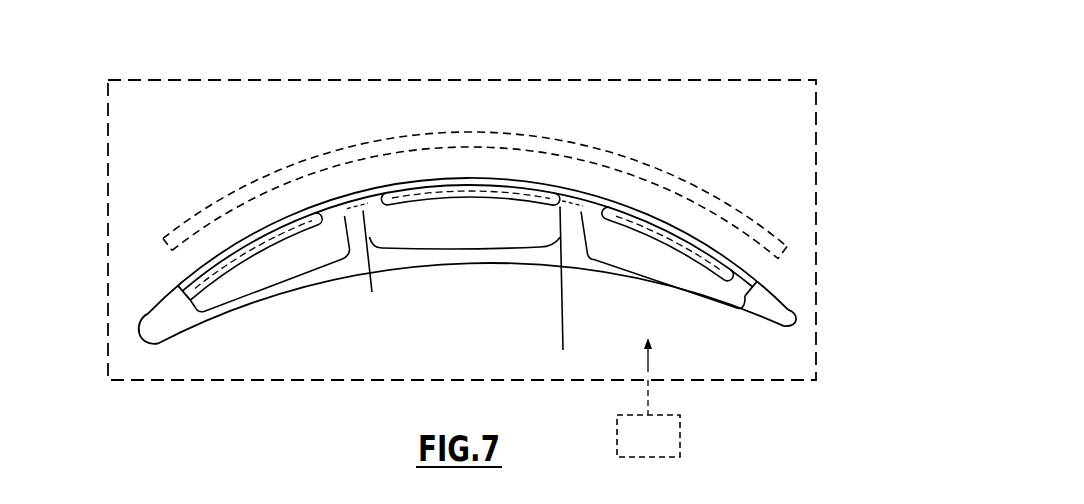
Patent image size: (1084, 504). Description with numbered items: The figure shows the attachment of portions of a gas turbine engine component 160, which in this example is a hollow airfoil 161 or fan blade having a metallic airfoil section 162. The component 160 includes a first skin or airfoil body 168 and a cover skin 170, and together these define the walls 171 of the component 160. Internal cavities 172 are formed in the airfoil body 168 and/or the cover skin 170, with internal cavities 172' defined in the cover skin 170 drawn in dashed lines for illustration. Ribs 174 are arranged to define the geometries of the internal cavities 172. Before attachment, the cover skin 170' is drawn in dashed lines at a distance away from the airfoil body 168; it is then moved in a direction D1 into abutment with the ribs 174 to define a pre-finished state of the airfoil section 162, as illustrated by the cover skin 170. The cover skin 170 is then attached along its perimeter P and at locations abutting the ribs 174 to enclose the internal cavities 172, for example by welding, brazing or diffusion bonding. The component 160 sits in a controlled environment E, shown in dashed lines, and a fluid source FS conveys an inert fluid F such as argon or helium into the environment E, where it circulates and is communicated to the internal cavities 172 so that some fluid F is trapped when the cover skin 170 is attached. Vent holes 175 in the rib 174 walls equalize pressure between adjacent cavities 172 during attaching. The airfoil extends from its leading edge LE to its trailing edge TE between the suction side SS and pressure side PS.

The component 160 is at (231, 150).
The hollow airfoil 161 is at (455, 181).
The metallic airfoil section 162 is at (134, 310).
The airfoil body 168 is at (203, 323).
The cover skin 170 is at (437, 251).
The cover skin 170' is at (456, 195).
The walls 171 is at (240, 249).
The internal cavities 172 is at (467, 286).
The internal cavities 172' is at (461, 203).
The ribs 174 is at (349, 259).
The vent holes 175 is at (372, 292).
The controlled environment E is at (584, 79).
The direction D1 is at (470, 170).
The perimeter P is at (186, 282).
The suction side SS is at (180, 287).
The pressure side PS is at (416, 268).
The leading edge LE is at (140, 332).
The trailing edge TE is at (797, 327).
The fluid F is at (650, 365).
The fluid source FS is at (665, 450).